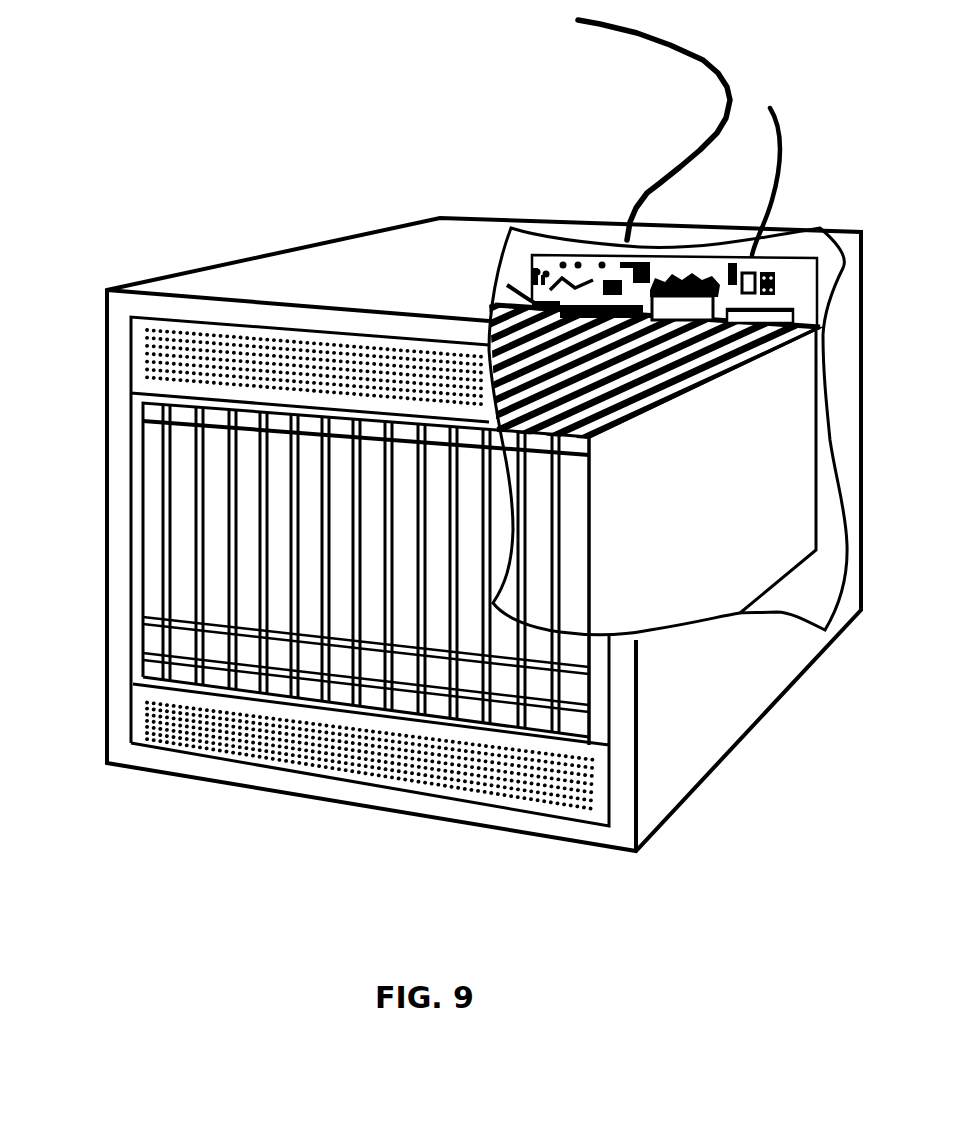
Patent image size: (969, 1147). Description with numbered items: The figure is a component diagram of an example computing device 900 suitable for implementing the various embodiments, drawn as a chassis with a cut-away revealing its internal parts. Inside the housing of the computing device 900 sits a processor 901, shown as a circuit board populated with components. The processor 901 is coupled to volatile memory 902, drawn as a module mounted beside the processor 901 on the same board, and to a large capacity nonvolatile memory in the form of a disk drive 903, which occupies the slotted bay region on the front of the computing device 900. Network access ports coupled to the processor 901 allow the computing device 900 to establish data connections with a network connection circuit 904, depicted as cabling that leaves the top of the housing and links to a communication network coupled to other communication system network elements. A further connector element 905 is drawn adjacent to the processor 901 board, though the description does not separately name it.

The computing device 900 is at (338, 237).
The processor 901 is at (682, 310).
The volatile memory 902 is at (785, 310).
The disk drive 903 is at (215, 487).
The network connection circuit 904 is at (730, 90).
The connector 905 is at (507, 285).